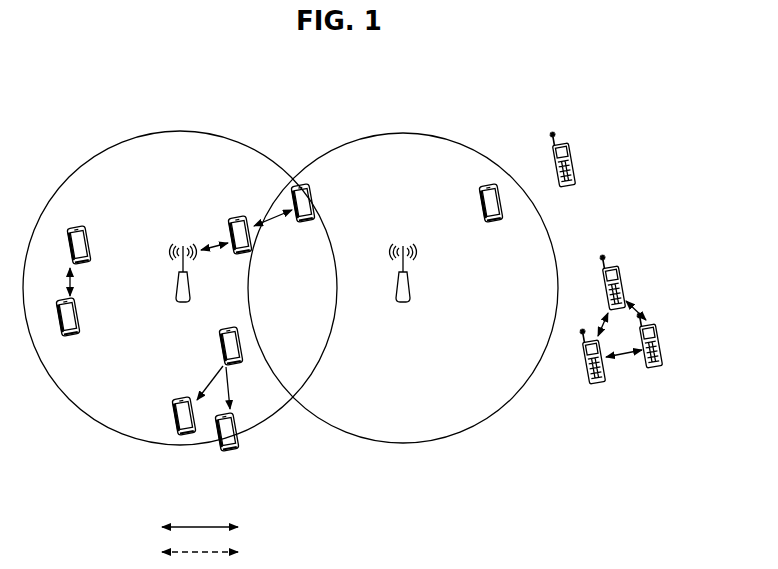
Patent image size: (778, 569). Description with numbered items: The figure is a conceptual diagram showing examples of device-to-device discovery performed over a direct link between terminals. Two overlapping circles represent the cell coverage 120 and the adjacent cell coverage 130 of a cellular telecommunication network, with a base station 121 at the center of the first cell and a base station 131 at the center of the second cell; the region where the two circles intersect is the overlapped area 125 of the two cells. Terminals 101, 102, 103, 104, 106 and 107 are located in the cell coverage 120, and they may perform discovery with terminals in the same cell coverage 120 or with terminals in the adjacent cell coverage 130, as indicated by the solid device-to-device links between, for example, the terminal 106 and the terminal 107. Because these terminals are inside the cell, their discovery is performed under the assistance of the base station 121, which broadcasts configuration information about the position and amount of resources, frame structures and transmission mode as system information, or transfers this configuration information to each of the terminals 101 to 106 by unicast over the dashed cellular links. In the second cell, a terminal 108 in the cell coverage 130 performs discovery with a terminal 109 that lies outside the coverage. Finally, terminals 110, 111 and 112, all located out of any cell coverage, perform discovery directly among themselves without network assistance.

The terminal 101 is at (78, 226).
The terminal 102 is at (77, 325).
The terminal 103 is at (185, 434).
The terminal 104 is at (229, 451).
The terminal 106 is at (236, 216).
The terminal 107 is at (304, 185).
The terminal 108 is at (492, 185).
The terminal 109 is at (568, 140).
The terminal 110 is at (616, 264).
The terminal 111 is at (596, 384).
The terminal 112 is at (371, 386).
The cell coverage 120 is at (178, 130).
The base station 121 is at (182, 246).
The overlapped area 125 is at (298, 408).
The cell coverage 130 is at (401, 132).
The base station 131 is at (402, 246).